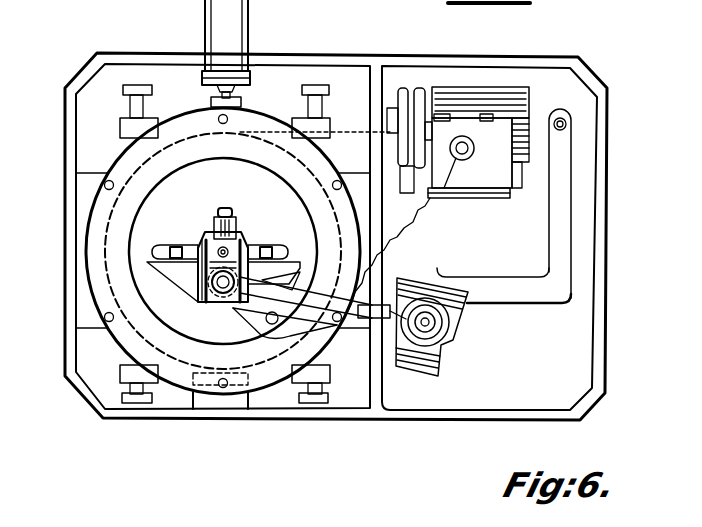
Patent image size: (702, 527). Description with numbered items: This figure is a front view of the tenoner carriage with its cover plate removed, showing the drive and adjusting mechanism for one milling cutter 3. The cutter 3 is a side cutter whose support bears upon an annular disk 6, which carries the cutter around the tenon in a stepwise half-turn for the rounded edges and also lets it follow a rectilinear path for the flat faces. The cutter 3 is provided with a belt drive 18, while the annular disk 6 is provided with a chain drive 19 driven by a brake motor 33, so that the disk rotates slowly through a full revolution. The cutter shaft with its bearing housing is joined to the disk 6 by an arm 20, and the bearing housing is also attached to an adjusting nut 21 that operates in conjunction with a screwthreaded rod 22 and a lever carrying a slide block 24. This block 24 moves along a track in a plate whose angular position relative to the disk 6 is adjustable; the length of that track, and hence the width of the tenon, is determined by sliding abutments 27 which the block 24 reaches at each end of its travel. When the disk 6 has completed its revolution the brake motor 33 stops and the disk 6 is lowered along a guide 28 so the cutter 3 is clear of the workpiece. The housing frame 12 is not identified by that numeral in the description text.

The milling cutter 3 is at (208, 305).
The annular disk 6 is at (197, 350).
The housing frame 12 is at (332, 60).
The belt drive 18 is at (387, 352).
The chain drive 19 is at (420, 213).
The arm 20 is at (250, 308).
The adjusting nut 21 is at (253, 242).
The screwthreaded rod 22 is at (233, 222).
The slide block 24 is at (207, 227).
The sliding abutments 27 is at (177, 247).
The guide 28 is at (132, 97).
The brake motor 33 is at (508, 97).